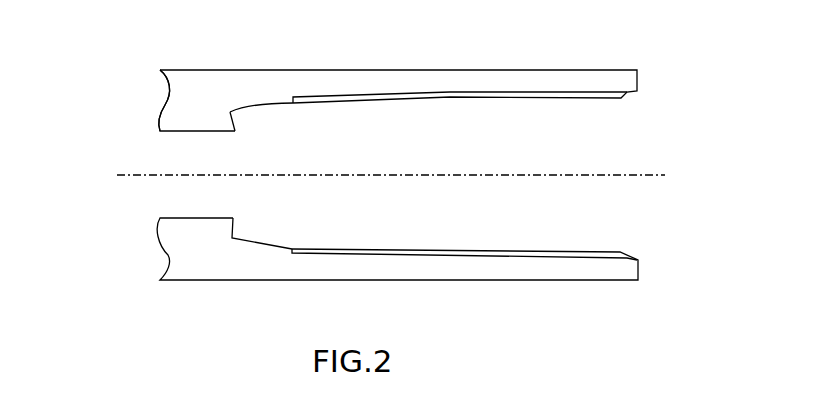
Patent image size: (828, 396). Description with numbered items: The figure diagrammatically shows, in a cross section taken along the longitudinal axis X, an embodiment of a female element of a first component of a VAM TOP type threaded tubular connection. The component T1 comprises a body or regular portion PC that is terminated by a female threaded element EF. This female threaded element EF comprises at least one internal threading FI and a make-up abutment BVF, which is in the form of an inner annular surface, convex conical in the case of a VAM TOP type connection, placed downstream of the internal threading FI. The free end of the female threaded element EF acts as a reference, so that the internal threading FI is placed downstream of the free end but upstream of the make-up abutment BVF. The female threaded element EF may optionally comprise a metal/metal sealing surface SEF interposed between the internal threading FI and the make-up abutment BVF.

The longitudinal axis X is at (392, 174).
The female threaded element EF is at (508, 70).
The body or regular portion PC is at (170, 89).
The metal/metal sealing surface SEF is at (254, 94).
The make-up abutment BVF is at (247, 212).
The internal threading FI is at (471, 234).
The component T1 is at (128, 258).